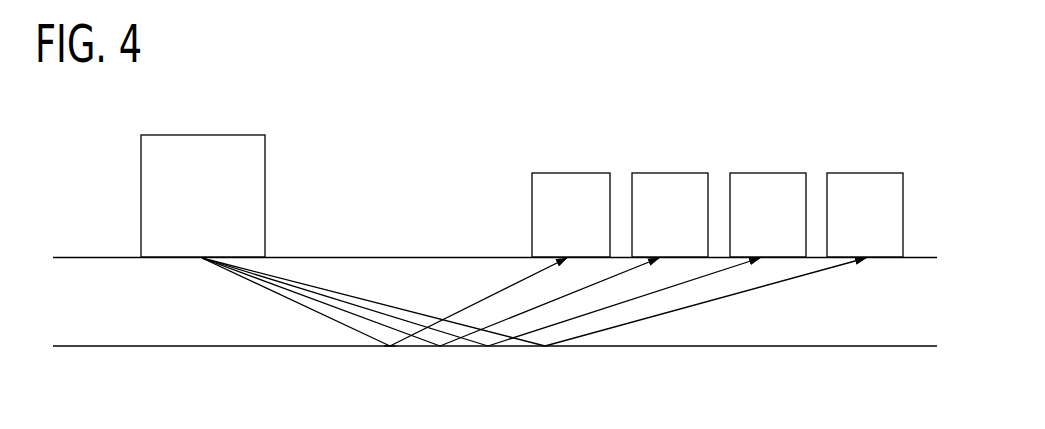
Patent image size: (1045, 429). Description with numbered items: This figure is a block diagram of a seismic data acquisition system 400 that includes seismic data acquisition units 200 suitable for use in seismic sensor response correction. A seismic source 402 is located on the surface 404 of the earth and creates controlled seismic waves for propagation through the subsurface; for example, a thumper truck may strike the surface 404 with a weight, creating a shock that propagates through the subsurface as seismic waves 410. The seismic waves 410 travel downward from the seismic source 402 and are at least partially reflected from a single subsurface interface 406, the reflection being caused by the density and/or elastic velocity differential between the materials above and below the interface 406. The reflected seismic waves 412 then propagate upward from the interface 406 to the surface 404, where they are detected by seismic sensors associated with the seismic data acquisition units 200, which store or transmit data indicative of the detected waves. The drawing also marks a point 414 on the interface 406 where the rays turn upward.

The seismic data acquisition system 400 is at (365, 140).
The seismic source 402 is at (222, 246).
The surface 404 is at (375, 257).
The subsurface interface 406 is at (288, 347).
The seismic waves 410 is at (287, 301).
The reflected seismic waves 412 is at (493, 297).
The reflection point 414 is at (390, 347).
The seismic data acquisition units 200 is at (590, 246).